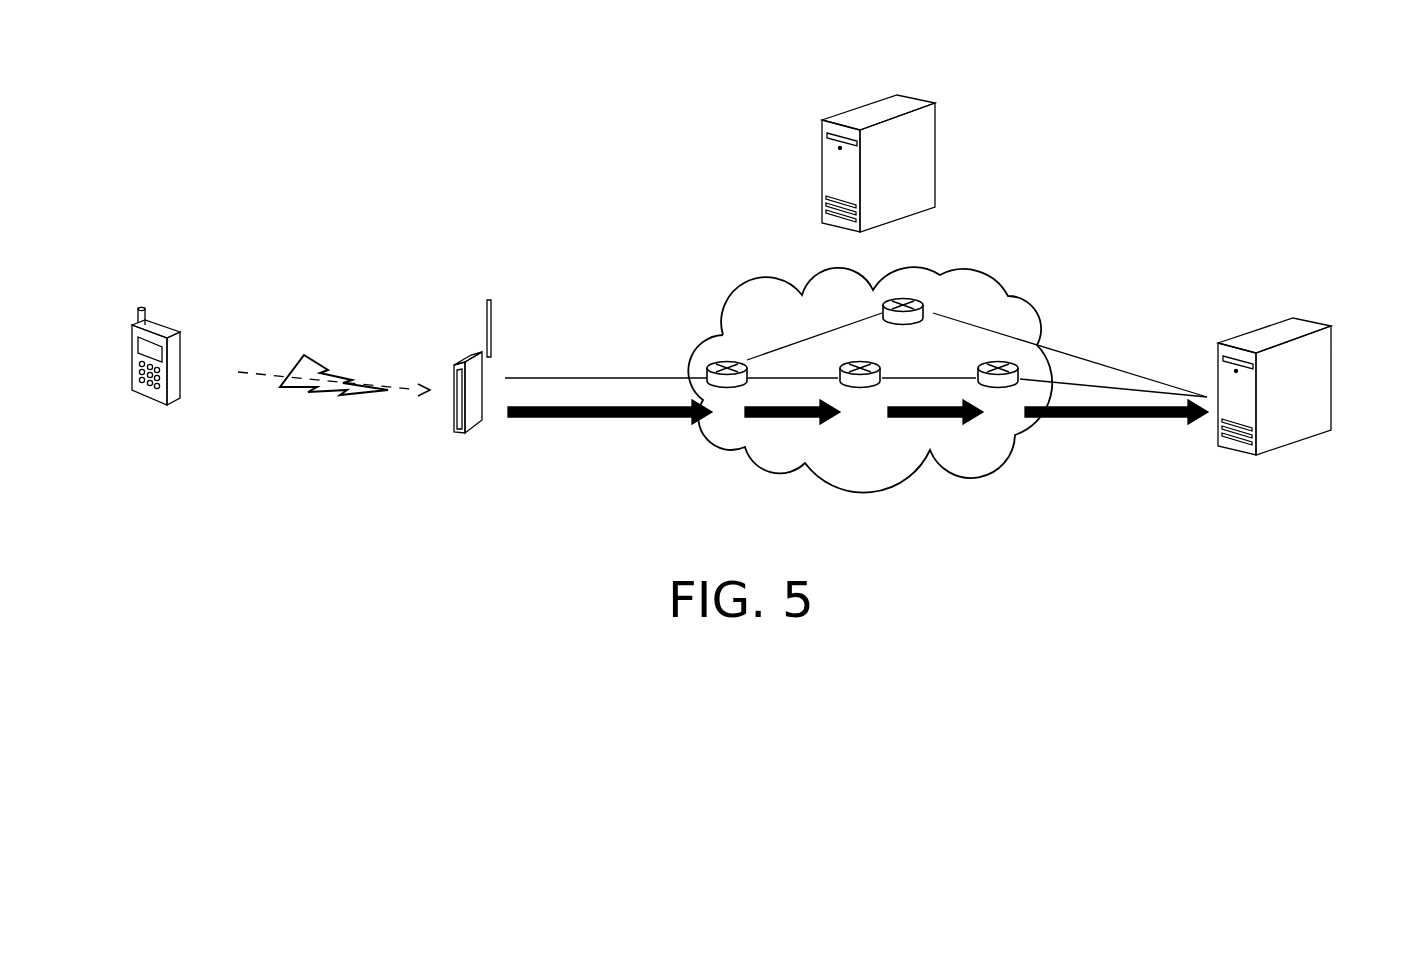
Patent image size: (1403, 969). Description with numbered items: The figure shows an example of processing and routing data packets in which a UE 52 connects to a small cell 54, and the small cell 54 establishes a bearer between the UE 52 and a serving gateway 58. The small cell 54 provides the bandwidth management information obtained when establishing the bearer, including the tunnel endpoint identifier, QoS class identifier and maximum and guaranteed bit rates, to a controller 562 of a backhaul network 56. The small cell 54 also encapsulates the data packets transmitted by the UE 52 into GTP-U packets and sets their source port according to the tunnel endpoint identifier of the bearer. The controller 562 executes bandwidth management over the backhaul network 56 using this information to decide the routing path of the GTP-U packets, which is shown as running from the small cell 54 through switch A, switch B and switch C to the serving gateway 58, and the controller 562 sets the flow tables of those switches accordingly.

The UE 52 is at (162, 323).
The small cell 54 is at (472, 423).
The backhaul network 56 is at (1025, 300).
The serving gateway 58 is at (1308, 322).
The controller 562 is at (913, 97).